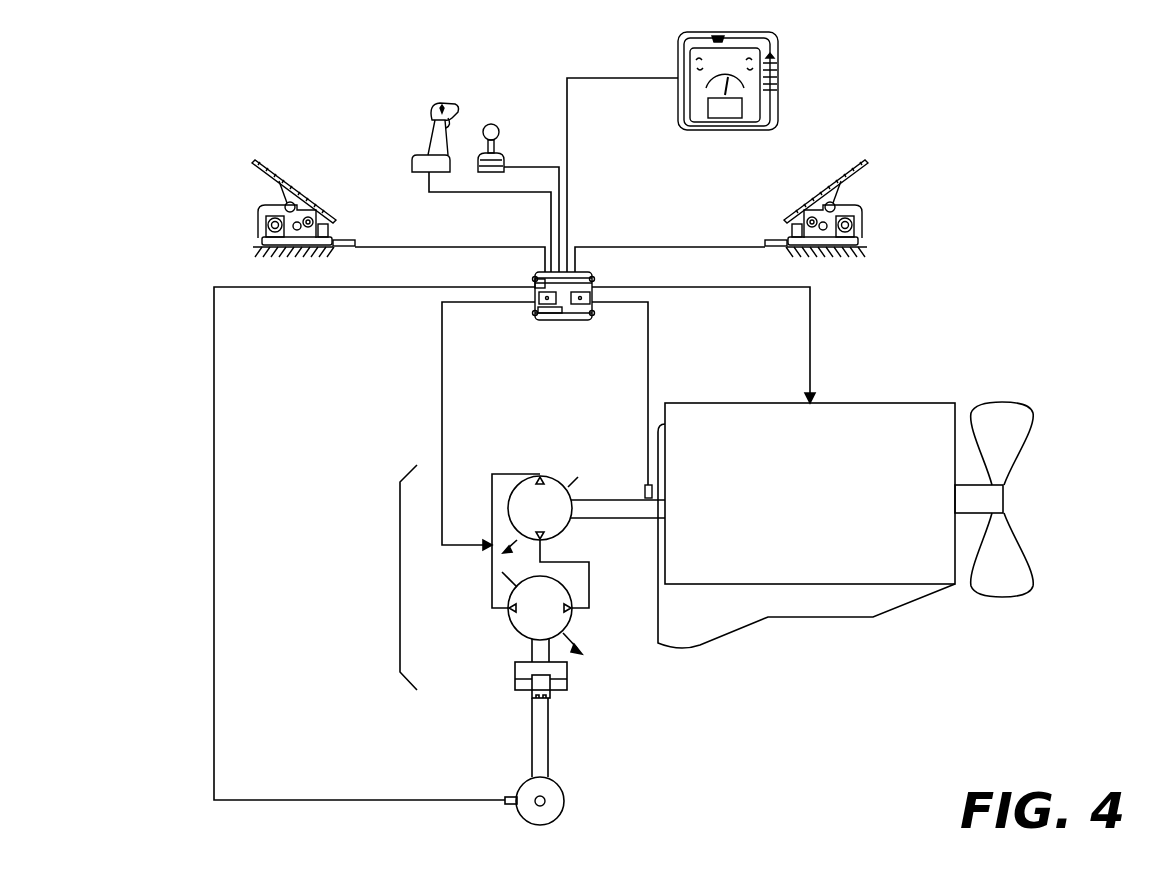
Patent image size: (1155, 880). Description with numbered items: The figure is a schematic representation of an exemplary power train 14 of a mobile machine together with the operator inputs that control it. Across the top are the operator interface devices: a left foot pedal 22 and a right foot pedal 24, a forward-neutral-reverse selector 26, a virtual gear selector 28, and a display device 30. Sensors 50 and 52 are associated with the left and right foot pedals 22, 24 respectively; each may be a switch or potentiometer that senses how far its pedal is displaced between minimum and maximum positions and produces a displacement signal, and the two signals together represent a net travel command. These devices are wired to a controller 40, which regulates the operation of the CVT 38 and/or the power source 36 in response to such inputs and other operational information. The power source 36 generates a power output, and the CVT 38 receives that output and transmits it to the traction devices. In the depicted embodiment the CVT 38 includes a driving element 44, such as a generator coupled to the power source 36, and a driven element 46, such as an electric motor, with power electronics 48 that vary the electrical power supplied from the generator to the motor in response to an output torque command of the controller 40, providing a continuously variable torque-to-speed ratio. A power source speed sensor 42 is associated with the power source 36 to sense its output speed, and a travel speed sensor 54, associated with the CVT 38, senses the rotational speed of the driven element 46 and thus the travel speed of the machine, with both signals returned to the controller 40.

The power train 14 is at (100, 238).
The left foot pedal 22 is at (297, 195).
The right foot pedal 24 is at (865, 160).
The forward-neutral-reverse (FNR) selector 26 is at (497, 125).
The virtual gear selector 28 is at (447, 102).
The display device 30 is at (778, 57).
The power source 36 is at (820, 503).
The CVT 38 is at (400, 572).
The controller 40 is at (596, 277).
The power source speed sensor 42 is at (645, 487).
The driving element 44 is at (508, 521).
The driven element 46 is at (573, 598).
The power electronics 48 is at (502, 474).
The sensor 50 is at (343, 242).
The sensor 52 is at (775, 240).
The travel speed sensor 54 is at (515, 797).